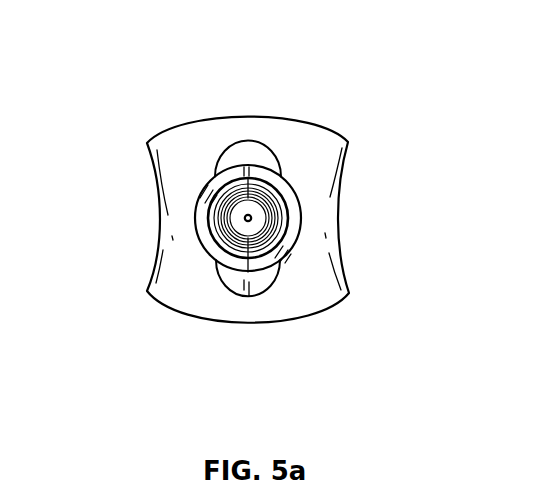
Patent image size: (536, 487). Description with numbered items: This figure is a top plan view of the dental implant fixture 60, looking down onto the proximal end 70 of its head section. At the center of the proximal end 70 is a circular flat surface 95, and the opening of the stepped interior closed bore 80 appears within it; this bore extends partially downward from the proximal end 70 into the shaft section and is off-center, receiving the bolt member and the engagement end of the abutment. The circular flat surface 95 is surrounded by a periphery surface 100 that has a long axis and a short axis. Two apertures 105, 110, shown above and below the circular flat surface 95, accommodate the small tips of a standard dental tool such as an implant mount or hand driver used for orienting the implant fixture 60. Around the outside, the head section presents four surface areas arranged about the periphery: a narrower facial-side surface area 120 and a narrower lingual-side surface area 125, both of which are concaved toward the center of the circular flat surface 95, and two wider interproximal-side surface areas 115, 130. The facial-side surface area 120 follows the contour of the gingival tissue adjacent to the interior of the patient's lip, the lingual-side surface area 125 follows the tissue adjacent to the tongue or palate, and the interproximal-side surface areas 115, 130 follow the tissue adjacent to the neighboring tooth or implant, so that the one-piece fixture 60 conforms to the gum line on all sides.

The dental implant fixture 60 is at (167, 79).
The proximal end 70 is at (162, 145).
The stepped interior closed bore 80 is at (290, 230).
The circular flat surface 95 is at (201, 218).
The periphery surface 100 is at (305, 300).
The aperture 105 is at (266, 137).
The aperture 110 is at (240, 285).
The interproximal-side surface area 115 is at (253, 323).
The facial-side surface area 120 is at (338, 200).
The lingual-side surface area 125 is at (162, 218).
The interproximal-side surface area 130 is at (263, 153).